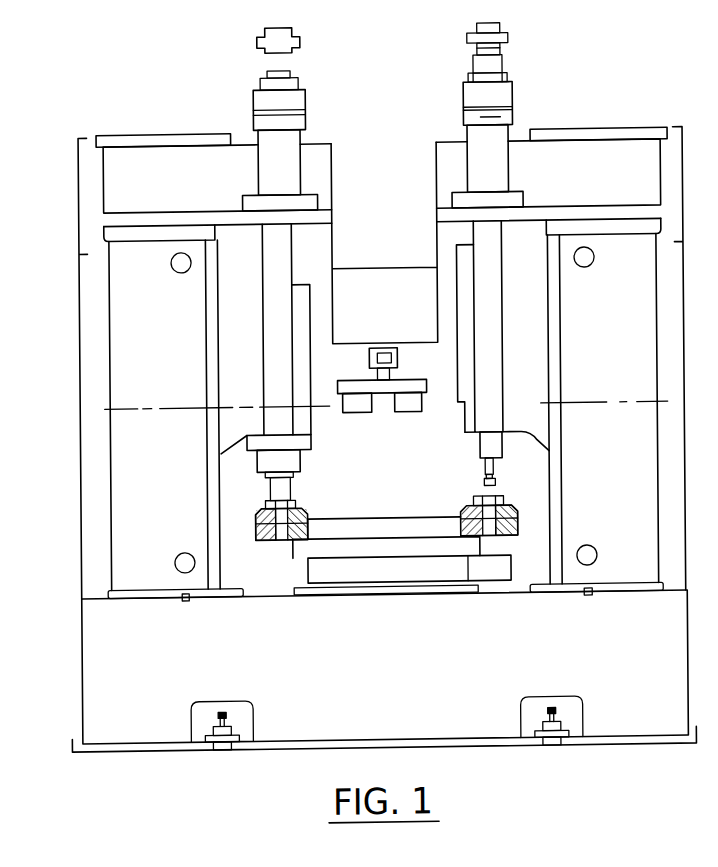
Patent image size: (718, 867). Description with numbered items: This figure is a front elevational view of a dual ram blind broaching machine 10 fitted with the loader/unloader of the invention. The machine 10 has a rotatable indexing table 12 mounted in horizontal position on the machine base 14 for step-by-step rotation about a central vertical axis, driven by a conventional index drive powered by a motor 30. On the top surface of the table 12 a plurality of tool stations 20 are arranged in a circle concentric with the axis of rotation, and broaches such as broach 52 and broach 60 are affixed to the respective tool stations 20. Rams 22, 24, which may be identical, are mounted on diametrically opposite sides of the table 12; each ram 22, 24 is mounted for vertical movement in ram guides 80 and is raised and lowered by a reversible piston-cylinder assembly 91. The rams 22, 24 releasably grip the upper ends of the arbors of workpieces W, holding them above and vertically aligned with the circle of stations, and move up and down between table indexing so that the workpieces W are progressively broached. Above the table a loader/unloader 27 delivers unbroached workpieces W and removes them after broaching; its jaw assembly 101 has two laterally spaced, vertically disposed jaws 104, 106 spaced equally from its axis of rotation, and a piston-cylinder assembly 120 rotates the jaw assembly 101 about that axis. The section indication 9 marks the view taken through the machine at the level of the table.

The machine 10 is at (676, 73).
The rotatable indexing table 12 is at (394, 520).
The machine base 14 is at (96, 624).
The tool stations 20 is at (255, 516).
The ram 22 is at (258, 460).
The ram 24 is at (465, 420).
The loader/unloader 27 is at (400, 316).
The motor 30 is at (503, 570).
The broach 52 is at (508, 500).
The broach 60 is at (267, 502).
The ram guides 80 is at (282, 263).
The reversible piston-cylinder assembly 91 is at (463, 93).
The jaw assembly 101 is at (403, 366).
The jaw 104 is at (357, 412).
The jaw 106 is at (410, 412).
The piston-cylinder assembly 120 is at (370, 360).
The section line for FIG. 9 is at (117, 496).
The workpieces W is at (293, 486).